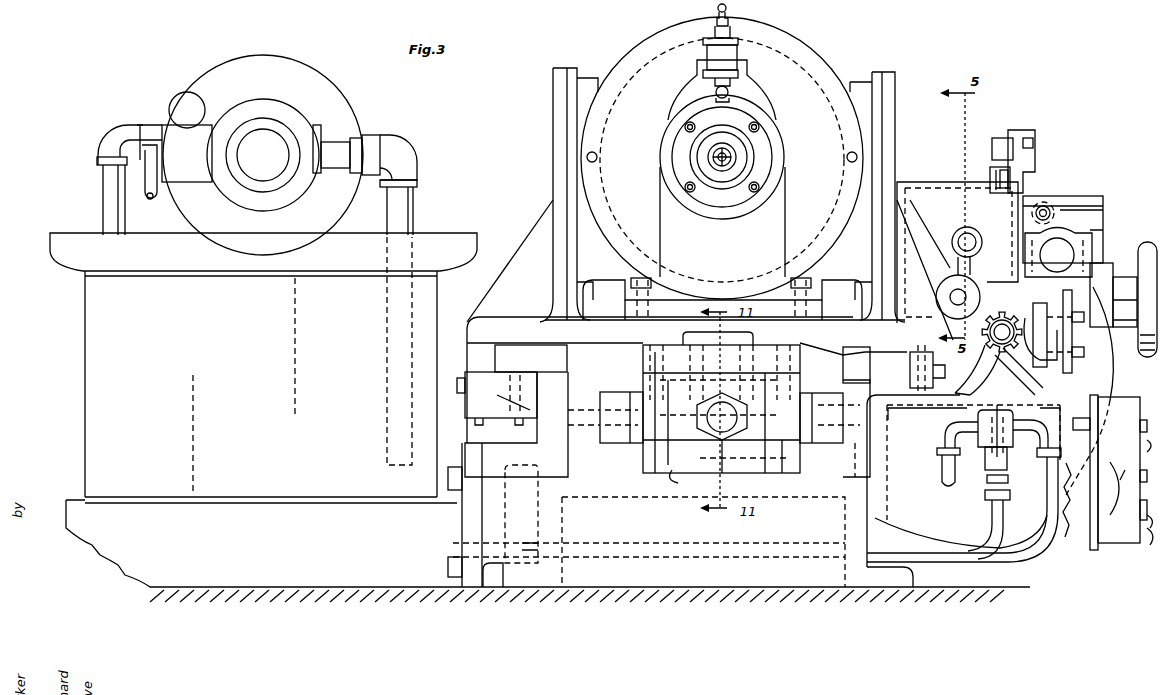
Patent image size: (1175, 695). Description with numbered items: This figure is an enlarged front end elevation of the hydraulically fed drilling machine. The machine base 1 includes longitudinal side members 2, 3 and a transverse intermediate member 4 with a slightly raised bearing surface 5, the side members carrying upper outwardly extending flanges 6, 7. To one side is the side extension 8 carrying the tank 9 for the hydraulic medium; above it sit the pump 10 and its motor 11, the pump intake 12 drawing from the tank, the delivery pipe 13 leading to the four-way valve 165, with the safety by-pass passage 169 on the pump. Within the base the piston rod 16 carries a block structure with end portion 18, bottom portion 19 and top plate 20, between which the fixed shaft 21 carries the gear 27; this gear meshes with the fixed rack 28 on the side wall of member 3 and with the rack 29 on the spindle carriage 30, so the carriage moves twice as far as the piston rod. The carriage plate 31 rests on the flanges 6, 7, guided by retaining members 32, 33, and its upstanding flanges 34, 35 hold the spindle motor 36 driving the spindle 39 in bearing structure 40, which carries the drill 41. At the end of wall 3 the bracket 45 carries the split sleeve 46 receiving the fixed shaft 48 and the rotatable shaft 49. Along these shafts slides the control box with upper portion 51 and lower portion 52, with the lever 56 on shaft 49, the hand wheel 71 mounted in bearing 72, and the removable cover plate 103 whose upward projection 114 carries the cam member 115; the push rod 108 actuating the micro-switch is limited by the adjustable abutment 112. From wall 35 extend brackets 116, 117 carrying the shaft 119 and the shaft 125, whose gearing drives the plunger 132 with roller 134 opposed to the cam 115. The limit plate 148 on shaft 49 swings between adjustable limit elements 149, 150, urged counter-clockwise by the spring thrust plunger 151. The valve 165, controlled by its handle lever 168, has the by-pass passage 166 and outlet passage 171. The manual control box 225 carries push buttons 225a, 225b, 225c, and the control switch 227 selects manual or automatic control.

The machine base 1 is at (753, 583).
The longitudinal side member 2 is at (555, 458).
The longitudinal side member 3 is at (856, 412).
The transverse intermediate member 4 is at (578, 485).
The bearing surface 5 is at (679, 481).
The upper flange 6 is at (531, 358).
The upper flange 7 is at (962, 469).
The side extension 8 is at (396, 565).
The tank 9 is at (233, 381).
The pump 10 is at (298, 120).
The motor 11 is at (260, 62).
The pump intake 12 is at (405, 207).
The delivery pipe 13 is at (147, 173).
The piston rod 16 is at (738, 417).
The end portion 18 is at (650, 385).
The bottom portion 19 is at (768, 463).
The top plate 20 is at (643, 358).
The fixed shaft 21 is at (727, 465).
The gear 27 is at (783, 476).
The fixed rack 28 is at (835, 435).
The rack 29 is at (621, 432).
The spindle carriage 30 is at (553, 237).
The plate 31 is at (598, 327).
The guiding and retaining member 32 is at (918, 382).
The guiding and retaining member 33 is at (505, 420).
The upstanding flange 34 is at (553, 146).
The upstanding flange 35 is at (896, 87).
The spindle motor 36 is at (808, 64).
The spindle 39 is at (740, 149).
The bearing structure 40 is at (775, 170).
The drill 41 is at (734, 158).
The bracket 45 is at (1112, 383).
The split shaft receiving sleeve 46 is at (1072, 228).
The fixed shaft 48 is at (1057, 255).
The rotatable shaft 49 is at (1006, 356).
The upper block portion 51 is at (1092, 210).
The lower block portion 52 is at (1099, 262).
The lever 56 is at (1012, 325).
The hand wheel 71 is at (1147, 244).
The bearing 72 is at (1120, 279).
The removable cover plate 103 is at (1088, 196).
The push rod 108 is at (1045, 207).
The adjustable abutment 112 is at (1050, 208).
The upward projection 114 is at (1022, 131).
The cam member 115 is at (999, 138).
The bracket 116 is at (922, 228).
The bracket 117 is at (918, 183).
The shaft 119 is at (962, 294).
The shaft 125 is at (970, 240).
The plunger 132 is at (990, 178).
The roller 134 is at (993, 173).
The limit plate 148 is at (1060, 343).
The adjustable limit element 149 is at (1071, 331).
The adjustable limit element 150 is at (1077, 312).
The spring thrust plunger 151 is at (1015, 378).
The four-way valve 165 is at (1043, 455).
The by-pass passage 166 is at (992, 520).
The valve handle lever 168 is at (995, 440).
The safety by-pass passage 169 is at (60, 199).
The outlet passage 171 is at (945, 480).
The control box 225 is at (1128, 412).
The push button 225a is at (1147, 446).
The push button 225b is at (1154, 540).
The push button 225c is at (1148, 527).
The control switch 227 is at (1125, 478).